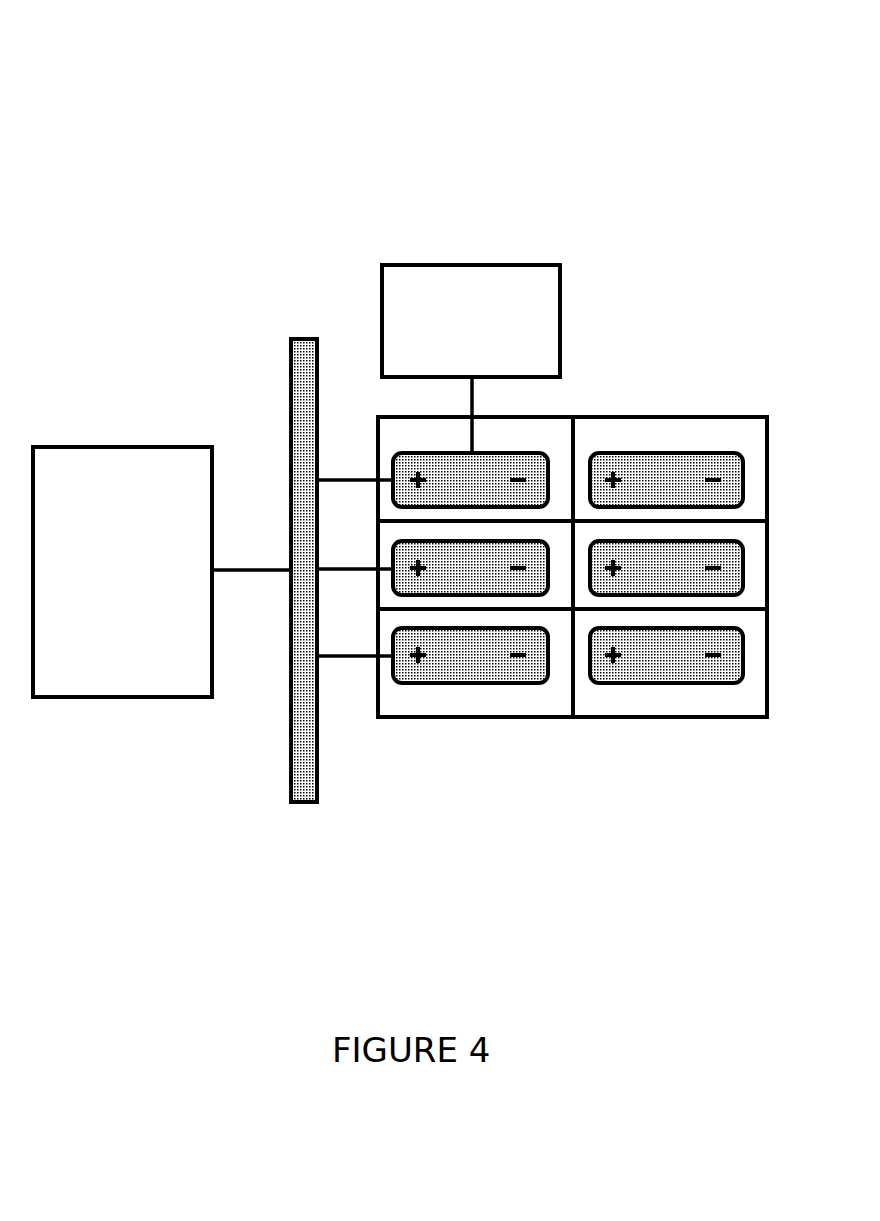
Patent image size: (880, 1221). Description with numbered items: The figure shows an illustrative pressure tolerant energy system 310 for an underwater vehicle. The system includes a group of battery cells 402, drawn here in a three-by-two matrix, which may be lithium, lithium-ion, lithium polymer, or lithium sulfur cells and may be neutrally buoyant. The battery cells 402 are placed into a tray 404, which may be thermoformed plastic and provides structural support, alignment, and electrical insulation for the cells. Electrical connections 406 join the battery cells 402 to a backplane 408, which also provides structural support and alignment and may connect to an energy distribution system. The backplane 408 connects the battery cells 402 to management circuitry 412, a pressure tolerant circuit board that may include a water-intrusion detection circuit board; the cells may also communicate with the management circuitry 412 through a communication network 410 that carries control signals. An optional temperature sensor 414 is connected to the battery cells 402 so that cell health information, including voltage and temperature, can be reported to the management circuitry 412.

The pressure tolerant energy system 310 is at (130, 65).
The battery cells 402 is at (665, 475).
The tray 404 is at (663, 740).
The electrical connections 406 is at (352, 663).
The backplane 408 is at (279, 808).
The communication network 410 is at (247, 557).
The management circuitry 412 is at (106, 498).
The temperature sensor 414 is at (472, 248).